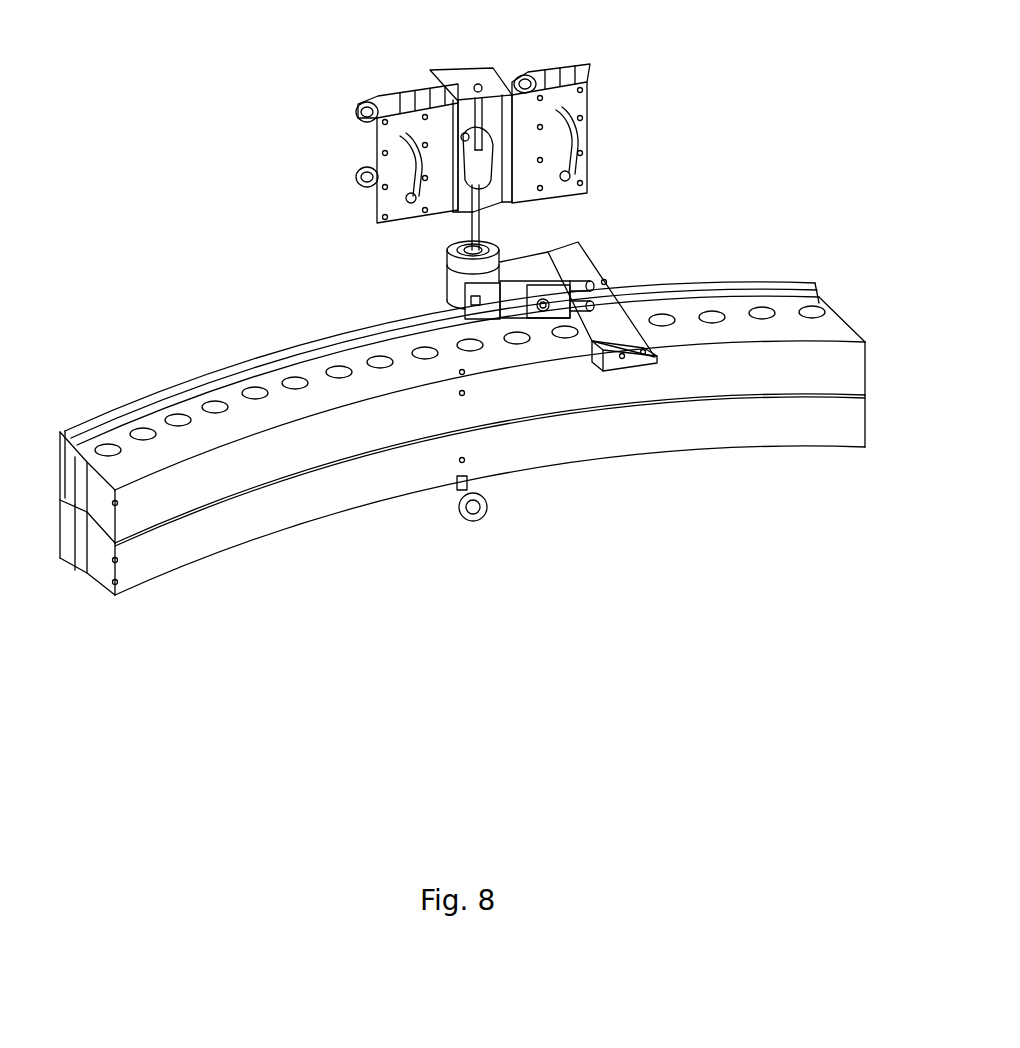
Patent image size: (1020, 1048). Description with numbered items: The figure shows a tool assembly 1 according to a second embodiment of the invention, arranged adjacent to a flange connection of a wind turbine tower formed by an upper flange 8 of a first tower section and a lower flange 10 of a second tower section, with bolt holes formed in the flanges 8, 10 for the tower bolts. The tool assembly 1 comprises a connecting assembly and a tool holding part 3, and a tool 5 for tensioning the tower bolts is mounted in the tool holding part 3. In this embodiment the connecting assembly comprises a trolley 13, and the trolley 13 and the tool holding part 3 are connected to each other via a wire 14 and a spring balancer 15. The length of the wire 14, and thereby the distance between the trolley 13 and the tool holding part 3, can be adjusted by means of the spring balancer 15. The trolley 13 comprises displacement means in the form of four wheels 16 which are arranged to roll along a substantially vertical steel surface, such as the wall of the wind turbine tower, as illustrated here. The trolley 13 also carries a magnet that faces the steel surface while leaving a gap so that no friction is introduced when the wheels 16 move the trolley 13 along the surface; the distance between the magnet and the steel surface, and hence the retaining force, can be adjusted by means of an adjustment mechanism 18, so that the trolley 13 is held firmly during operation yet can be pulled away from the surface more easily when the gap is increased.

The tool assembly 1 is at (497, 190).
The tool holding part 3 is at (465, 288).
The tool 5 is at (617, 318).
The upper flange 8 is at (270, 510).
The lower flange 10 is at (265, 408).
The trolley 13 is at (602, 103).
The wire 14 is at (478, 225).
The spring balancer 15 is at (485, 175).
The wheels 16 is at (365, 122).
The adjustment mechanism 18 is at (465, 137).